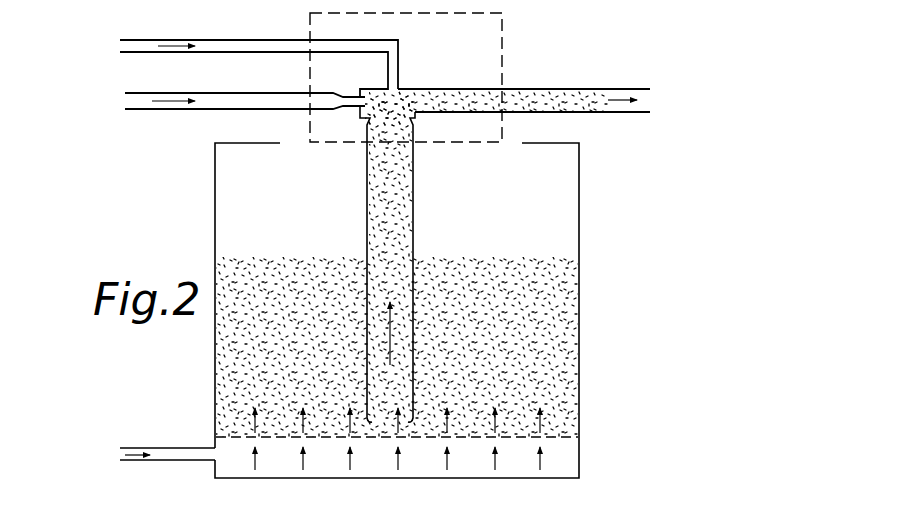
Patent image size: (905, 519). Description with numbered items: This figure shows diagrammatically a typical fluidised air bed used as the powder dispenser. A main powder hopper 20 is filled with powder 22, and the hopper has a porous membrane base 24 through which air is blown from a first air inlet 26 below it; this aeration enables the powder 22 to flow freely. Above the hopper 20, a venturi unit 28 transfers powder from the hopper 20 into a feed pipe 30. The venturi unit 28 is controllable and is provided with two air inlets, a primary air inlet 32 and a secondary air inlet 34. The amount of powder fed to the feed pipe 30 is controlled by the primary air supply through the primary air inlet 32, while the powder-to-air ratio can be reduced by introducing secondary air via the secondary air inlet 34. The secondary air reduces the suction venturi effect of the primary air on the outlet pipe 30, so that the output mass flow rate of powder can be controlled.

The main powder hopper 20 is at (580, 217).
The powder 22 is at (545, 328).
The porous membrane base 24 is at (559, 439).
The first air inlet 26 is at (168, 448).
The venturi unit 28 is at (502, 47).
The feed pipe 30 is at (588, 89).
The primary air inlet 32 is at (212, 110).
The secondary air inlet 34 is at (234, 40).